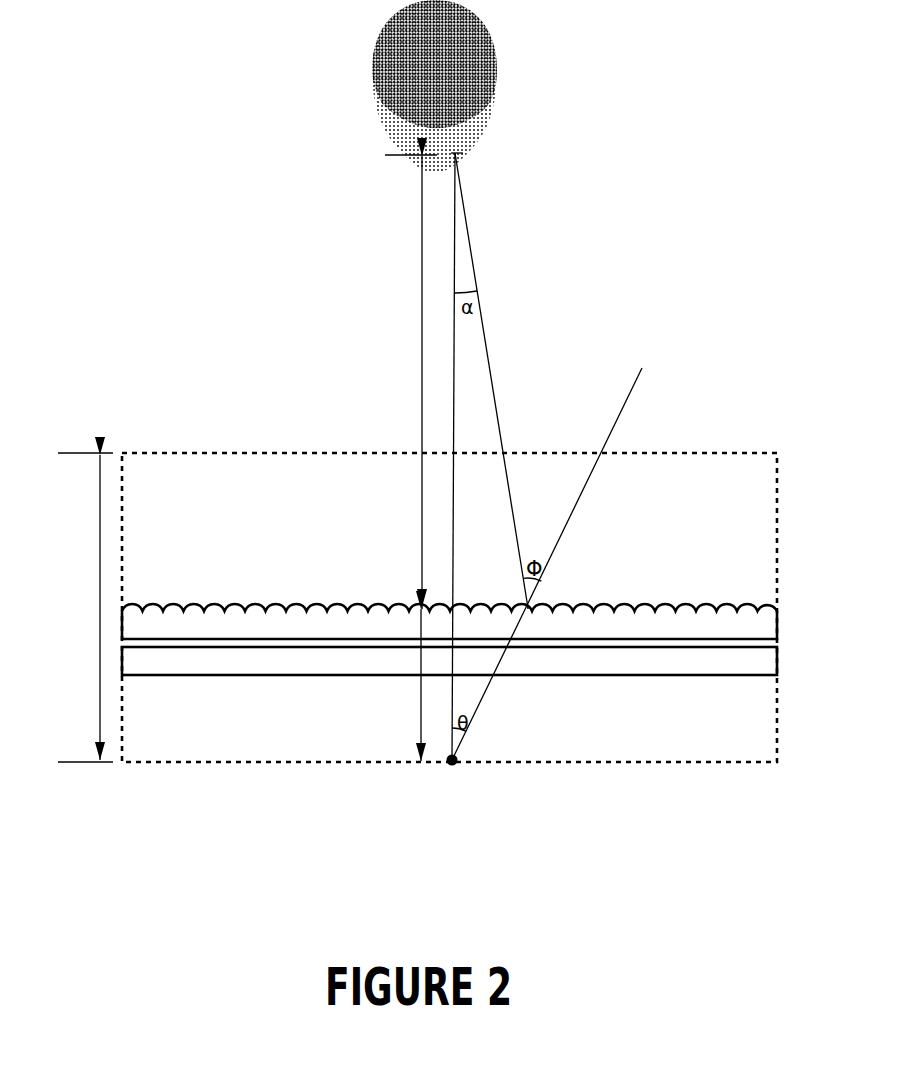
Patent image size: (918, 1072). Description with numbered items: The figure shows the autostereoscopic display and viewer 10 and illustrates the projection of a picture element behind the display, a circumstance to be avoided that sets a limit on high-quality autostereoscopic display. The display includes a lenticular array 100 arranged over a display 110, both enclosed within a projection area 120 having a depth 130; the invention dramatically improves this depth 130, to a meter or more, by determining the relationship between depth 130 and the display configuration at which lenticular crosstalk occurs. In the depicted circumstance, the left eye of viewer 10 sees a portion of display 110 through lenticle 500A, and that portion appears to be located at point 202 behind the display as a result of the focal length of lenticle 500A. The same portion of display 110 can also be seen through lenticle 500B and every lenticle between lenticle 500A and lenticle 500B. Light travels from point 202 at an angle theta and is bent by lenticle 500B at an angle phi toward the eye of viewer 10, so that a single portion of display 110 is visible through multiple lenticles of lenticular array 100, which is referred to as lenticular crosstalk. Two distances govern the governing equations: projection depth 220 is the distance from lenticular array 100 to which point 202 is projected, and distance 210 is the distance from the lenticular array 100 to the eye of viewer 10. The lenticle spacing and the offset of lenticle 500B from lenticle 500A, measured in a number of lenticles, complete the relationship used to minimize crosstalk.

The viewer 10 is at (503, 83).
The lenticular array 100 is at (780, 621).
The display 110 is at (780, 657).
The projection area 120 is at (310, 764).
The depth 130 is at (100, 628).
The point 202 is at (452, 766).
The distance 210 is at (422, 368).
The projection depth 220 is at (420, 703).
The lenticle 500A is at (486, 592).
The lenticle 500B is at (528, 607).